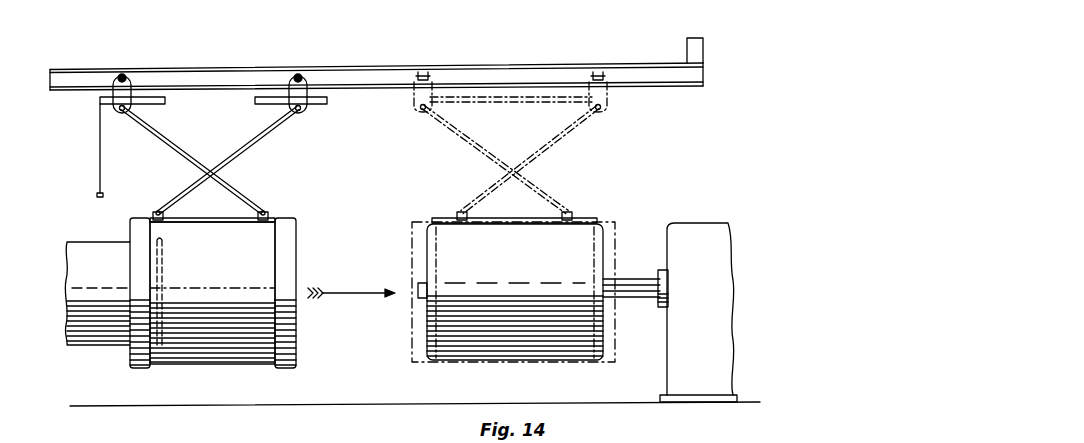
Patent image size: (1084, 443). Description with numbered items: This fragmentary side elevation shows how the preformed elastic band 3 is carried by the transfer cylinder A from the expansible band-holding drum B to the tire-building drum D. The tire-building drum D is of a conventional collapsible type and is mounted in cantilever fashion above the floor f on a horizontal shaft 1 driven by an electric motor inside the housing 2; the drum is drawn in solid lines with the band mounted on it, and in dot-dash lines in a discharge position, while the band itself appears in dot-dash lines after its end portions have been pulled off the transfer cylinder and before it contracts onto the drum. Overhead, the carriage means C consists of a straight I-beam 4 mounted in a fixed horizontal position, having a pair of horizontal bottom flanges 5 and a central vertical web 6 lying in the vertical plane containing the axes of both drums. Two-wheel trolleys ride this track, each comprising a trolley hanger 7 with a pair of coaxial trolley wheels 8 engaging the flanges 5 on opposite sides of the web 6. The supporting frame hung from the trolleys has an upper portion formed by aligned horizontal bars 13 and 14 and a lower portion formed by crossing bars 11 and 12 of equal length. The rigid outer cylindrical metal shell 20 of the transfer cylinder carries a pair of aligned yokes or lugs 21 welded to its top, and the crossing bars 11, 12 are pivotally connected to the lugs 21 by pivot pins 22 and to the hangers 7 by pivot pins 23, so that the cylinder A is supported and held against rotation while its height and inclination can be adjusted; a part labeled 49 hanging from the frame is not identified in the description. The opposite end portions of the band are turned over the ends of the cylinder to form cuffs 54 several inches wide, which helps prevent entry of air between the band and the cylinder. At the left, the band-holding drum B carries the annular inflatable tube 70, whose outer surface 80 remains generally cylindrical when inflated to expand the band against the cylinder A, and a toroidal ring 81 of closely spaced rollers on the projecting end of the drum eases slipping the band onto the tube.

The horizontal shaft 1 is at (639, 279).
The housing 2 is at (700, 230).
The preformed elastic band 3 is at (418, 216).
The I-beam 4 is at (371, 72).
The horizontal bottom flanges 5 is at (352, 86).
The central vertical web 6 is at (512, 72).
The trolley hanger 7 is at (128, 100).
The trolley wheels 8 is at (121, 75).
The crossing bar 11 is at (242, 144).
The crossing bar 12 is at (177, 130).
The horizontal bar 13 is at (163, 101).
The horizontal bar 14 is at (318, 100).
The outer cylindrical metal shell 20 is at (194, 364).
The yokes or lugs 21 is at (256, 218).
The horizontal pivot pin or bolt 22 is at (157, 211).
The horizontal pivot pin or bolt 23 is at (122, 110).
The pull cable 49 is at (99, 192).
The cuffs 54 is at (130, 232).
The annular inflatable tube or bag 70 is at (72, 288).
The outer surface 80 is at (98, 346).
The toroidal ring 81 is at (164, 272).
The transfer cylinder A is at (303, 217).
The expansible band-holding drum B is at (86, 241).
The carriage means C is at (279, 148).
The tire-building drum D is at (510, 292).
The floor f is at (407, 403).